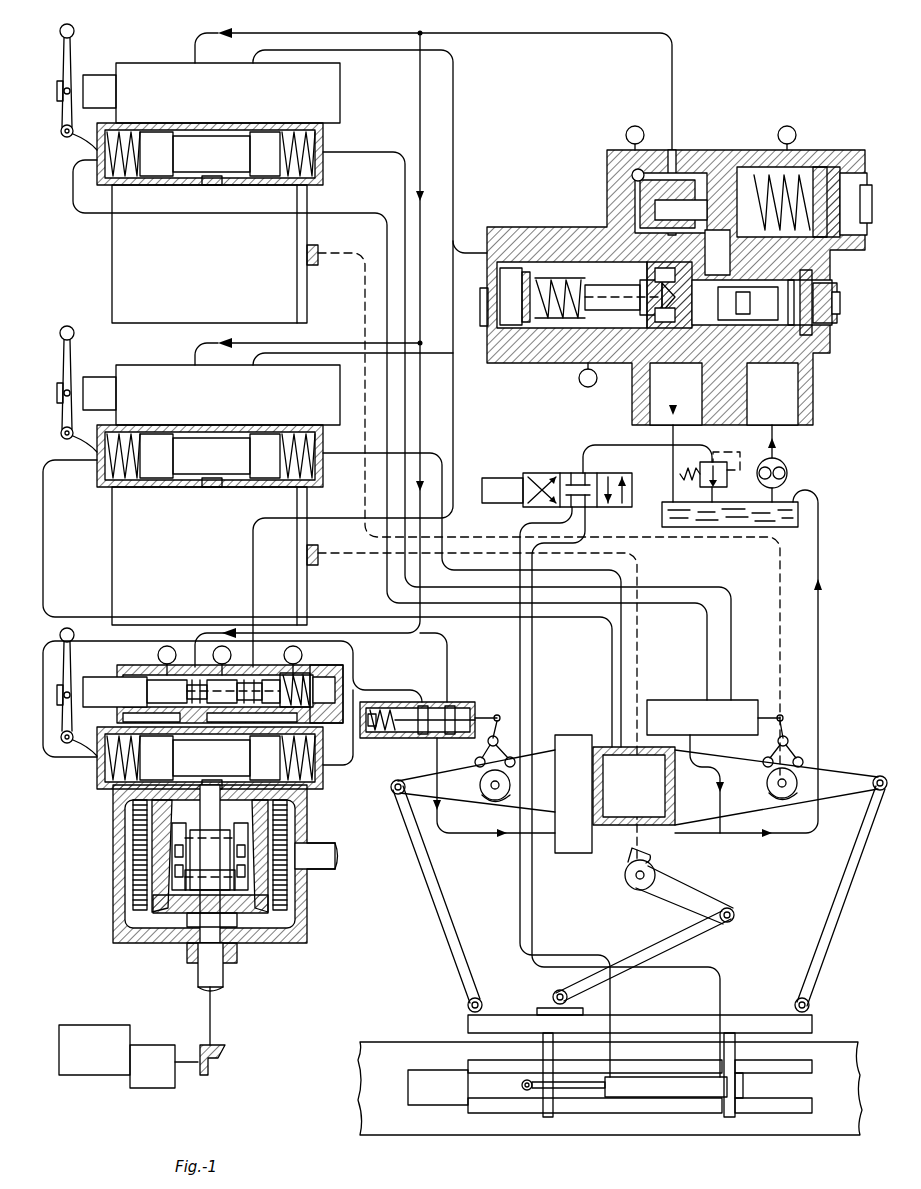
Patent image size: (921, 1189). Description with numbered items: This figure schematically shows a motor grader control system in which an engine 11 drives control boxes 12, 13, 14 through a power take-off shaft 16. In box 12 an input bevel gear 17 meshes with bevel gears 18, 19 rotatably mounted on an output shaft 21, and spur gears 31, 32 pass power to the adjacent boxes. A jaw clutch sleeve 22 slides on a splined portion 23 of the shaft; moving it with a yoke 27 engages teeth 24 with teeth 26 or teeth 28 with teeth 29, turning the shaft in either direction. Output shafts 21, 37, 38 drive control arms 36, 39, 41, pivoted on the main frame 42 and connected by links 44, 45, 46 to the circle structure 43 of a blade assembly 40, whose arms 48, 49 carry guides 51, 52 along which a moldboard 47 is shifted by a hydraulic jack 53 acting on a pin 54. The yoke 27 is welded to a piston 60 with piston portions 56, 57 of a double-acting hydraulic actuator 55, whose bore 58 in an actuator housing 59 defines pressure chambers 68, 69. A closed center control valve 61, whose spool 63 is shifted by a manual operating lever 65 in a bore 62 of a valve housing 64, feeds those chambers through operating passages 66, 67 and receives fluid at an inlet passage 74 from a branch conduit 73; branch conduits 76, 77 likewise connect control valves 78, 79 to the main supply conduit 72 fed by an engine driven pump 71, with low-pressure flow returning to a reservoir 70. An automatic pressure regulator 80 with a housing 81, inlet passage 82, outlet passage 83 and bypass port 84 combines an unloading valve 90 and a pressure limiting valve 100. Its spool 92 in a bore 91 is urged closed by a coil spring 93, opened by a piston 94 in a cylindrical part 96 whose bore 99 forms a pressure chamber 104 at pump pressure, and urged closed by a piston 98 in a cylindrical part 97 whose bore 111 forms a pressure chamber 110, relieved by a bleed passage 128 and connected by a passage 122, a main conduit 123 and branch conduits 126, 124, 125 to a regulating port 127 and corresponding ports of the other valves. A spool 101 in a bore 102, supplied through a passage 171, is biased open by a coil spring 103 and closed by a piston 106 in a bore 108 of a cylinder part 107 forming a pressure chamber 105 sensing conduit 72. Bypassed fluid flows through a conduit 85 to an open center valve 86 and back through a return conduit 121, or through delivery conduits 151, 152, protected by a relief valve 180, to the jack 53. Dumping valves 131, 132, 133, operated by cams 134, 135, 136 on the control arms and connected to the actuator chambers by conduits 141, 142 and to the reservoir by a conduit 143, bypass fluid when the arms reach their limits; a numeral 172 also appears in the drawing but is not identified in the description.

The engine 11 is at (110, 1008).
The control box 12 is at (215, 930).
The control box 13 is at (112, 551).
The control box 14 is at (112, 257).
The power take-off shaft 16 is at (224, 988).
The input bevel gear 17 is at (252, 940).
The bevel gear 18 is at (307, 888).
The bevel gear 19 is at (160, 850).
The power transmitting output shaft 21 is at (337, 860).
The sleeve 22 is at (190, 905).
The output shaft splined portion 23 is at (187, 868).
The teeth 24 is at (237, 828).
The teeth 26 is at (265, 815).
The yoke 27 is at (216, 808).
The teeth 28 is at (182, 826).
The teeth 29 is at (133, 824).
The spur gear 31 is at (133, 893).
The spur gear 32 is at (287, 900).
The control arm 36 is at (405, 782).
The output shaft 37 is at (320, 550).
The output shaft 38 is at (320, 250).
The control arm 39 is at (695, 896).
The blade assembly 40 is at (402, 1028).
The control arm 41 is at (855, 775).
The main frame 42 is at (676, 788).
The circle structure 43 is at (750, 1015).
The link 44 is at (445, 935).
The link 45 is at (636, 960).
The link 46 is at (840, 918).
The moldboard 47 is at (390, 1135).
The arm 48 is at (548, 1120).
The arm 49 is at (729, 1120).
The guide 51 is at (468, 1065).
The guide 52 is at (468, 1105).
The double-acting hydraulic jack 53 is at (652, 1095).
The pin 54 is at (522, 1085).
The double-acting hydraulic actuator 55 is at (198, 707).
The piston portion 56 is at (170, 748).
The piston portion 57 is at (250, 752).
The bore 58 is at (140, 758).
The actuator housing 59 is at (100, 775).
The piston 60 is at (220, 771).
The closed center control valve 61 is at (213, 696).
The bore 62 is at (126, 670).
The spool 63 is at (104, 687).
The valve housing 64 is at (320, 668).
The manual operating lever 65 is at (68, 628).
The operating passage 66 is at (140, 715).
The operating passage 67 is at (268, 720).
The pressure chamber 68 is at (112, 778).
The pressure chamber 69 is at (323, 768).
The reservoir 70 is at (785, 527).
The engine driven pump 71 is at (788, 468).
The main supply conduit 72 is at (680, 44).
The branch conduit 73 is at (422, 415).
The inlet passage 74 is at (194, 635).
The branch conduit 76 is at (328, 343).
The branch conduit 77 is at (347, 33).
The control valve 78 is at (170, 350).
The control valve 79 is at (160, 63).
The automatic pressure regulator 80 is at (673, 271).
The housing 81 is at (858, 160).
The inlet passage 82 is at (790, 415).
The outlet passage 83 is at (678, 150).
The bypass port 84 is at (650, 400).
The conduit 85 is at (610, 438).
The open center valve 86 is at (525, 473).
The unloading valve 90 is at (872, 345).
The bore 91 is at (791, 325).
The spool 92 is at (762, 272).
The coil spring 93 is at (520, 325).
The piston 94 is at (836, 293).
The cylindrical part 96 is at (740, 325).
The cylindrical part 97 is at (612, 285).
The piston 98 is at (612, 348).
The bore 99 is at (748, 303).
The pressure limiting valve 100 is at (770, 150).
The spool 101 is at (632, 173).
The bore 102 is at (795, 175).
The coil spring 103 is at (828, 167).
The pressure chamber 104 is at (738, 287).
The pressure chamber 105 is at (700, 205).
The piston 106 is at (638, 215).
The cylinder part 107 is at (690, 175).
The bore 108 is at (650, 195).
The pressure chamber 110 is at (645, 315).
The bore 111 is at (585, 262).
The return-to-reservoir conduit 121 is at (673, 495).
The passage 122 is at (517, 250).
The main conduit 123 is at (468, 250).
The branch conduit 124 is at (296, 368).
The branch conduit 125 is at (453, 72).
The branch conduit 126 is at (453, 445).
The regulating port 127 is at (264, 670).
The bleed passage 128 is at (556, 320).
The dumping valve 131 is at (450, 702).
The dumping valve 132 is at (575, 735).
The dumping valve 133 is at (675, 700).
The cam 134 is at (488, 800).
The cam 135 is at (634, 892).
The cam 136 is at (775, 800).
The conduit 141 is at (447, 665).
The conduit 142 is at (405, 692).
The conduit 143 is at (820, 645).
The delivery conduit 151 is at (532, 928).
The delivery conduit 152 is at (520, 925).
The passage 171 is at (700, 255).
The land 172 is at (167, 691).
The relief valve 180 is at (726, 462).